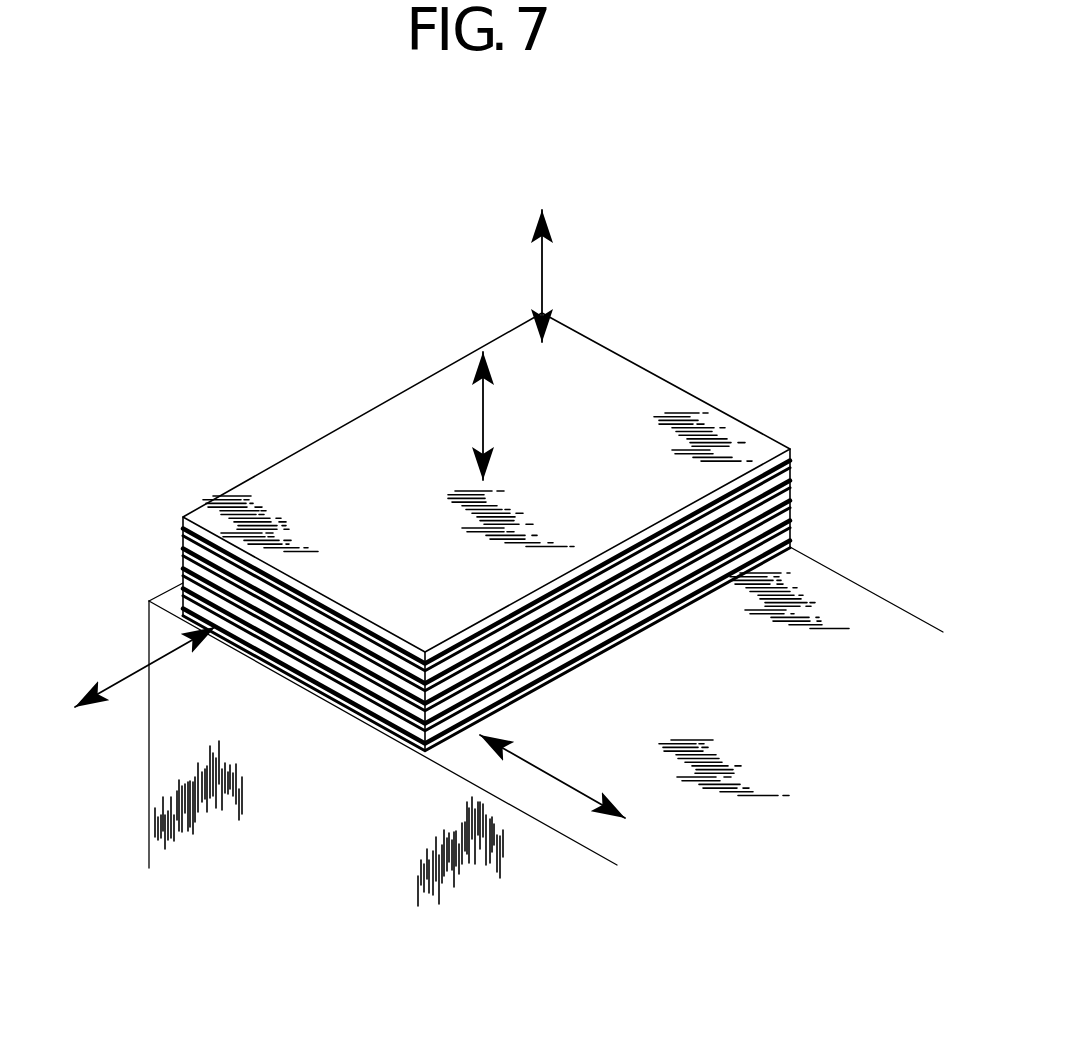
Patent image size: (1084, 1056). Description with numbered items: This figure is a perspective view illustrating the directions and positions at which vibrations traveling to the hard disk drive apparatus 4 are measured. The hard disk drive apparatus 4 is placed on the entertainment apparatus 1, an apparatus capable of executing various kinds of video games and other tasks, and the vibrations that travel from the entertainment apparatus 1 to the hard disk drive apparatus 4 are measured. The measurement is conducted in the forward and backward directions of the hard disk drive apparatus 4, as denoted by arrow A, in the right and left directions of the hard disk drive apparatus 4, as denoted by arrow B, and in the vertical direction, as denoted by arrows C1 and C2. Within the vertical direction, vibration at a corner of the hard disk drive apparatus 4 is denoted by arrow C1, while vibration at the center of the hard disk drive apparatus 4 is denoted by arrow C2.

The entertainment apparatus 1 is at (858, 600).
The hard disk drive apparatus 4 is at (278, 480).
The arrow A is at (131, 675).
The arrow B is at (549, 774).
The arrow C1 is at (544, 278).
The arrow C2 is at (486, 420).